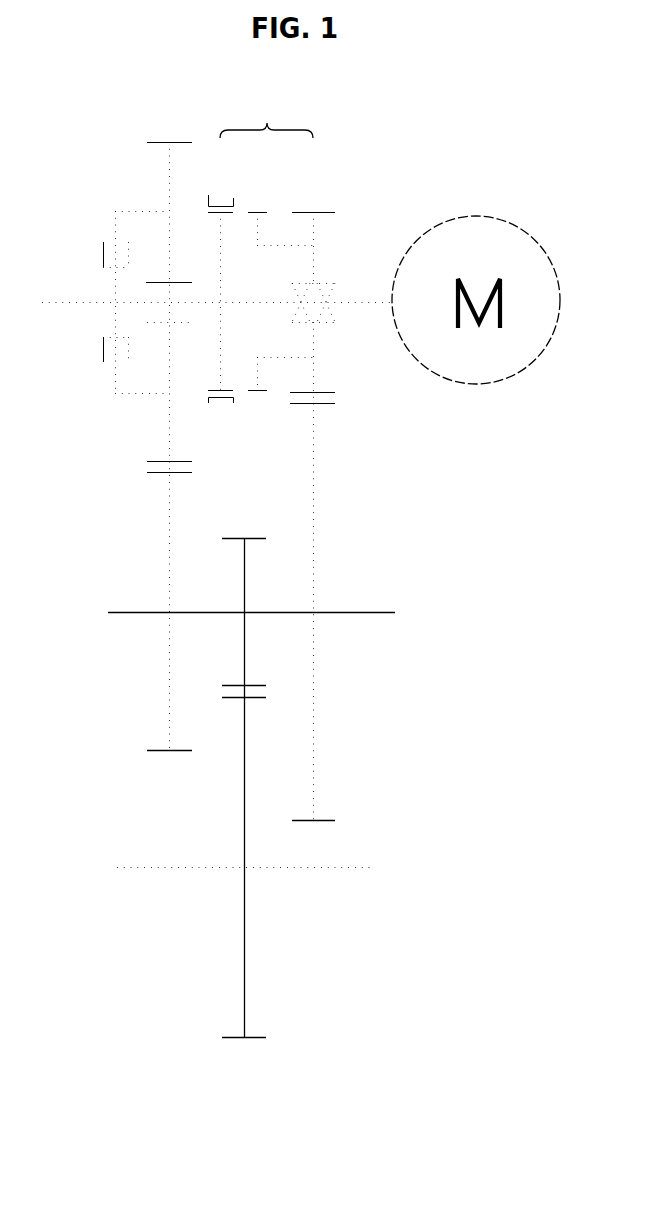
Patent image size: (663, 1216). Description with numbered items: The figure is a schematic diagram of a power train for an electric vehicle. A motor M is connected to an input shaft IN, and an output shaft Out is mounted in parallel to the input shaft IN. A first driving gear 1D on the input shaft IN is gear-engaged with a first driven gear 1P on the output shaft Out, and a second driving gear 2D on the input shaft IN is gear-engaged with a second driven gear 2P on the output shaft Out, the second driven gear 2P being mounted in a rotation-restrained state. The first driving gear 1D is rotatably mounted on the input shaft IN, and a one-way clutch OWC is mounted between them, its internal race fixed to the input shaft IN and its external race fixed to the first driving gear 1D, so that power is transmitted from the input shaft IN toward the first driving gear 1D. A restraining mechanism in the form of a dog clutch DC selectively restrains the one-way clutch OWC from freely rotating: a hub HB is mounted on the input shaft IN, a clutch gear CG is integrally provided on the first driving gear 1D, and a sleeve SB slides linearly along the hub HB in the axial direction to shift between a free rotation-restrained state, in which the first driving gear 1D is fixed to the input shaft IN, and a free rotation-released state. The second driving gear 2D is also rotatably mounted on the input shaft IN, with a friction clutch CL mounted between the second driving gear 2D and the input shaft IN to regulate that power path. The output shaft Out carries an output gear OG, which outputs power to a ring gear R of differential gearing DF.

The input shaft IN is at (60, 304).
The second driving gear 2D is at (158, 142).
The friction clutch CL is at (101, 236).
The dog clutch DC is at (266, 121).
The sleeve SB is at (208, 195).
The hub HB is at (222, 258).
The clutch gear CG is at (259, 212).
The first driving gear 1D is at (329, 212).
The one-way clutch OWC is at (332, 326).
The motor M is at (476, 300).
The output gear OG is at (249, 538).
The output shaft Out is at (373, 613).
The second driven gear 2P is at (160, 751).
The first driven gear 1P is at (322, 822).
The differential gearing DF is at (254, 876).
The ring gear R is at (252, 1038).